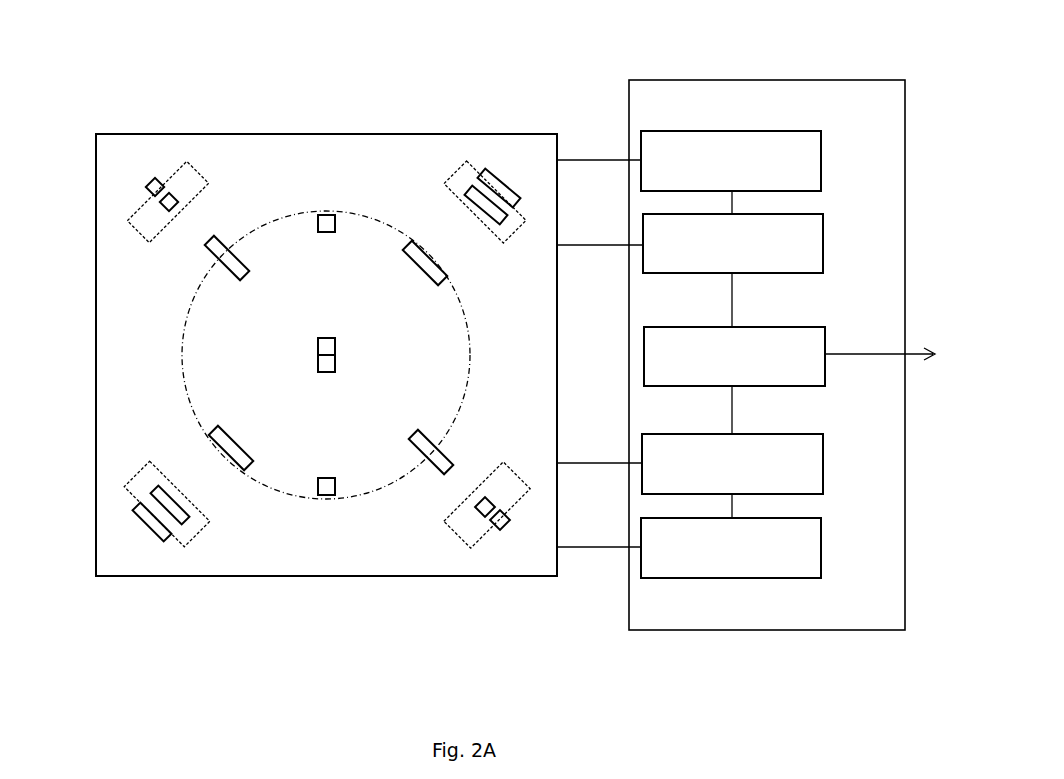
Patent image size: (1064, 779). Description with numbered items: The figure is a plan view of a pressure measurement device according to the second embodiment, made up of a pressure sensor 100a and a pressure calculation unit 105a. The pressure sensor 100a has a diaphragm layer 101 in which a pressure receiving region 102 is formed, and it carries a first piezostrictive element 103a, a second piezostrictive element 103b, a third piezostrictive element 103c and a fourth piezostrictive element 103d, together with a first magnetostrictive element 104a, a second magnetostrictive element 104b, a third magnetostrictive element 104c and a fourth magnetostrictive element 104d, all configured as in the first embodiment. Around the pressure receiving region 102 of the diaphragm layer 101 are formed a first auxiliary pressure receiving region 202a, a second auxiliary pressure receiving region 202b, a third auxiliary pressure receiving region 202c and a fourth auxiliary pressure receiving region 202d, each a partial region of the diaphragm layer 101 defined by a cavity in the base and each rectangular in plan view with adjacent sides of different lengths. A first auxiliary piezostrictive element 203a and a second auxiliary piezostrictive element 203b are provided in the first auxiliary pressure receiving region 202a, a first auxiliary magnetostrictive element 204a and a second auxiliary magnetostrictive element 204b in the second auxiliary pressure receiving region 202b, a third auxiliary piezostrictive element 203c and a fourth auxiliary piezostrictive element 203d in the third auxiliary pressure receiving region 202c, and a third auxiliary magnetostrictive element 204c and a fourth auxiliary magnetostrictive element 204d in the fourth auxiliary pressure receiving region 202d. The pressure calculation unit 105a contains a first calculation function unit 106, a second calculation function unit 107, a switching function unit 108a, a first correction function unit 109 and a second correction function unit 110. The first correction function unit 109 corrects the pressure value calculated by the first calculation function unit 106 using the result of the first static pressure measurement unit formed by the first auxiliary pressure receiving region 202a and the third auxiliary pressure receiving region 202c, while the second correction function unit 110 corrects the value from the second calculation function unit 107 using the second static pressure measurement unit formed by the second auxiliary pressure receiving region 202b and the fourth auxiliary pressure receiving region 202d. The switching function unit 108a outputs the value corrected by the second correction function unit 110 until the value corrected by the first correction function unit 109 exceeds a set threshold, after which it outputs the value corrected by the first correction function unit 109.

The pressure sensor 100a is at (287, 62).
The diaphragm layer 101 is at (96, 386).
The pressure receiving region 102 is at (456, 313).
The first piezostrictive element 103a is at (210, 258).
The second piezostrictive element 103b is at (216, 445).
The third piezostrictive element 103c is at (447, 452).
The fourth piezostrictive element 103d is at (420, 248).
The first magnetostrictive element 104a is at (326, 213).
The second magnetostrictive element 104b is at (326, 496).
The third magnetostrictive element 104c is at (318, 346).
The fourth magnetostrictive element 104d is at (335, 362).
The pressure calculation unit 105a is at (760, 631).
The first calculation function unit 106 is at (790, 131).
The second calculation function unit 107 is at (821, 546).
The switching function unit 108a is at (790, 327).
The first correction function unit 109 is at (823, 243).
The second correction function unit 110 is at (823, 463).
The first auxiliary pressure receiving region 202a is at (458, 176).
The second auxiliary pressure receiving region 202b is at (190, 157).
The third auxiliary pressure receiving region 202c is at (198, 534).
The fourth auxiliary pressure receiving region 202d is at (458, 538).
The first auxiliary piezostrictive element 203a is at (500, 172).
The second auxiliary piezostrictive element 203b is at (510, 188).
The third auxiliary piezostrictive element 203c is at (152, 488).
The fourth auxiliary piezostrictive element 203d is at (136, 516).
The first auxiliary magnetostrictive element 204a is at (160, 205).
The second auxiliary magnetostrictive element 204b is at (148, 187).
The third auxiliary magnetostrictive element 204c is at (485, 515).
The fourth auxiliary magnetostrictive element 204d is at (506, 527).